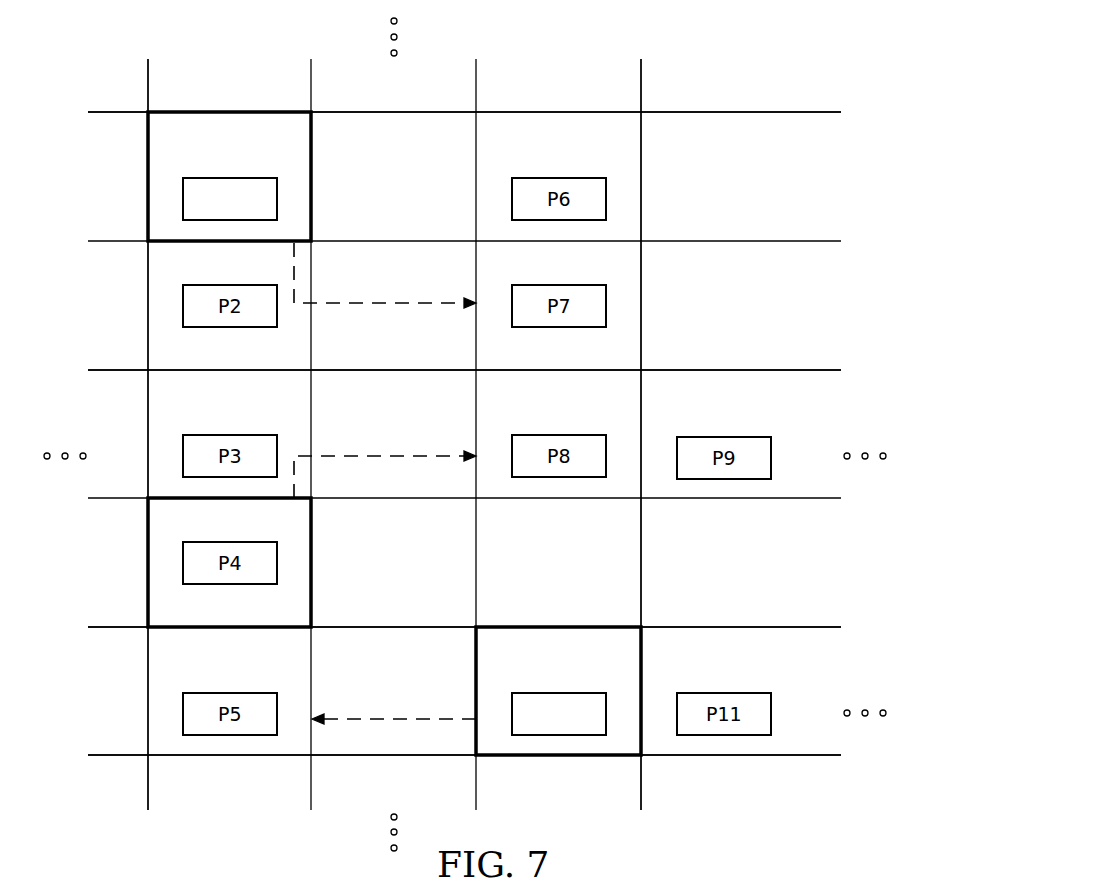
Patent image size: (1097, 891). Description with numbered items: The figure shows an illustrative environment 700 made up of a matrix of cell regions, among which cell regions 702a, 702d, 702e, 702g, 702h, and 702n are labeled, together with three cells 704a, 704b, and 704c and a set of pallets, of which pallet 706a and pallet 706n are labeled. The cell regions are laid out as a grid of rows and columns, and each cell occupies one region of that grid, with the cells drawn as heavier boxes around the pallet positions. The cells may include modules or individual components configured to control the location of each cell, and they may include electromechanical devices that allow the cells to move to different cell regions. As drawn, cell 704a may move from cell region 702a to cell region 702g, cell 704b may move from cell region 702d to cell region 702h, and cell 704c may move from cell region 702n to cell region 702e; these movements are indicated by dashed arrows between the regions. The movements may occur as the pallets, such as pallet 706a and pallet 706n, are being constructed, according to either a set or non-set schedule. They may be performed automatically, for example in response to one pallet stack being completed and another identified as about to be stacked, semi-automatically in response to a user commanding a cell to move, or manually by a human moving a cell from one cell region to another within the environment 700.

The environment 700 is at (792, 71).
The cell region 702a is at (230, 108).
The cell region 702d is at (147, 564).
The cell region 702e is at (147, 692).
The cell region 702g is at (642, 306).
The cell region 702h is at (642, 413).
The cell region 702n is at (557, 757).
The cell 704a is at (304, 176).
The cell 704b is at (304, 565).
The cell 704c is at (630, 670).
The pallet 706a is at (230, 176).
The pallet 706n is at (558, 690).